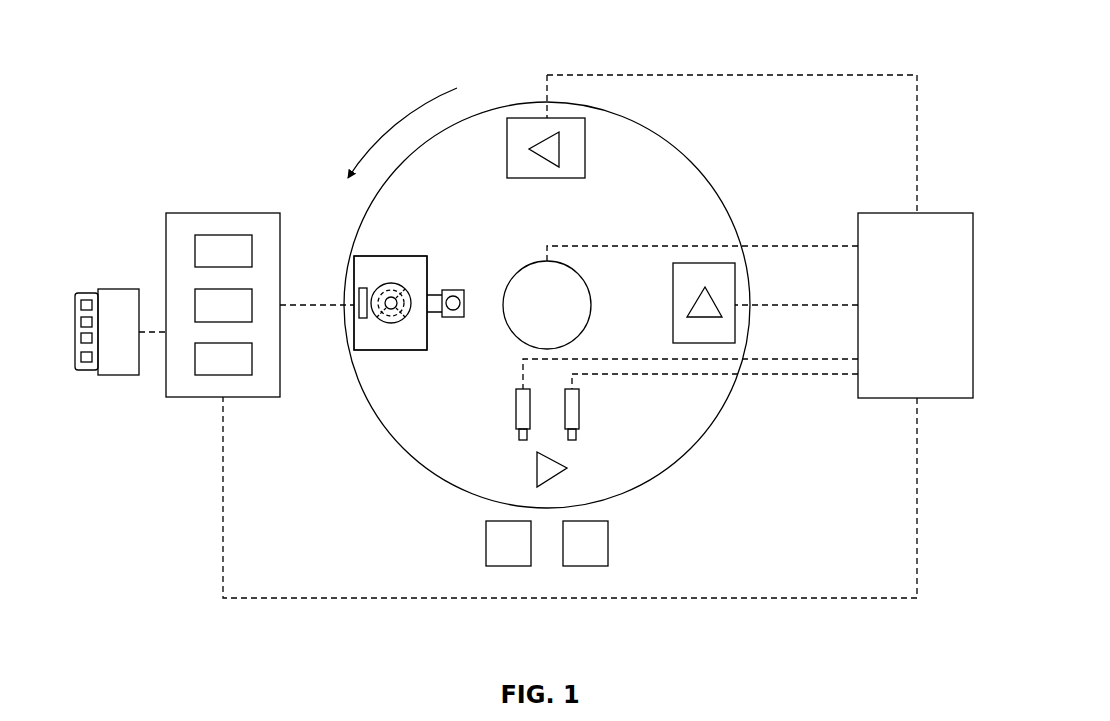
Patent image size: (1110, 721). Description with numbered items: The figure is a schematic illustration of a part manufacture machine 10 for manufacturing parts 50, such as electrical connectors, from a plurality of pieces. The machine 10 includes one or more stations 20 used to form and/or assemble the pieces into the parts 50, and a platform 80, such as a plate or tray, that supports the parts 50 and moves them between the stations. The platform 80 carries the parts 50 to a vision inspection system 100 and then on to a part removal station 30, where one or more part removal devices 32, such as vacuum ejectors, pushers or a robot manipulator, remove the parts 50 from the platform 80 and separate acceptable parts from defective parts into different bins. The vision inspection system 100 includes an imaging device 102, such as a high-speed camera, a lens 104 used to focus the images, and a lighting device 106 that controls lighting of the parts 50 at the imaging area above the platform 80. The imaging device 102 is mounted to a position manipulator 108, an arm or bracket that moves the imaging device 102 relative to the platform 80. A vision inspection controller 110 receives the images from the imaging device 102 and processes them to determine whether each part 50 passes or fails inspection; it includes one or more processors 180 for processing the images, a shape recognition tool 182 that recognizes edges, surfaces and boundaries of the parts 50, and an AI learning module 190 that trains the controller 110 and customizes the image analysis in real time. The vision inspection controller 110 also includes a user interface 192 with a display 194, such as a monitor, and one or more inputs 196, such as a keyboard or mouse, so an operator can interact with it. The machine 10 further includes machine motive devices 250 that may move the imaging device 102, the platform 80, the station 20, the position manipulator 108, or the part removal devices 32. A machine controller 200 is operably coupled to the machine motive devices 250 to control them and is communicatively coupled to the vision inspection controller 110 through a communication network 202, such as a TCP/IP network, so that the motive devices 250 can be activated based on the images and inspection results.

The part manufacture machine 10 is at (352, 62).
The station 20 is at (525, 112).
The part removal station 30 is at (594, 448).
The part removal device 32 is at (516, 408).
The part 50 is at (560, 150).
The platform 80 is at (670, 164).
The vision inspection system 100 is at (390, 300).
The imaging device 102 is at (380, 317).
The lens 104 is at (370, 250).
The lighting device 106 is at (367, 316).
The position manipulator 108 is at (453, 318).
The vision inspection controller 110 is at (162, 258).
The processor 180 is at (223, 251).
The shape recognition tool 182 is at (223, 305).
The AI learning module 190 is at (223, 359).
The user interface 192 is at (100, 380).
The display 194 is at (118, 378).
The input 196 is at (83, 293).
The machine controller 200 is at (902, 214).
The communication network 202 is at (861, 601).
The machine motive device 250 is at (565, 118).